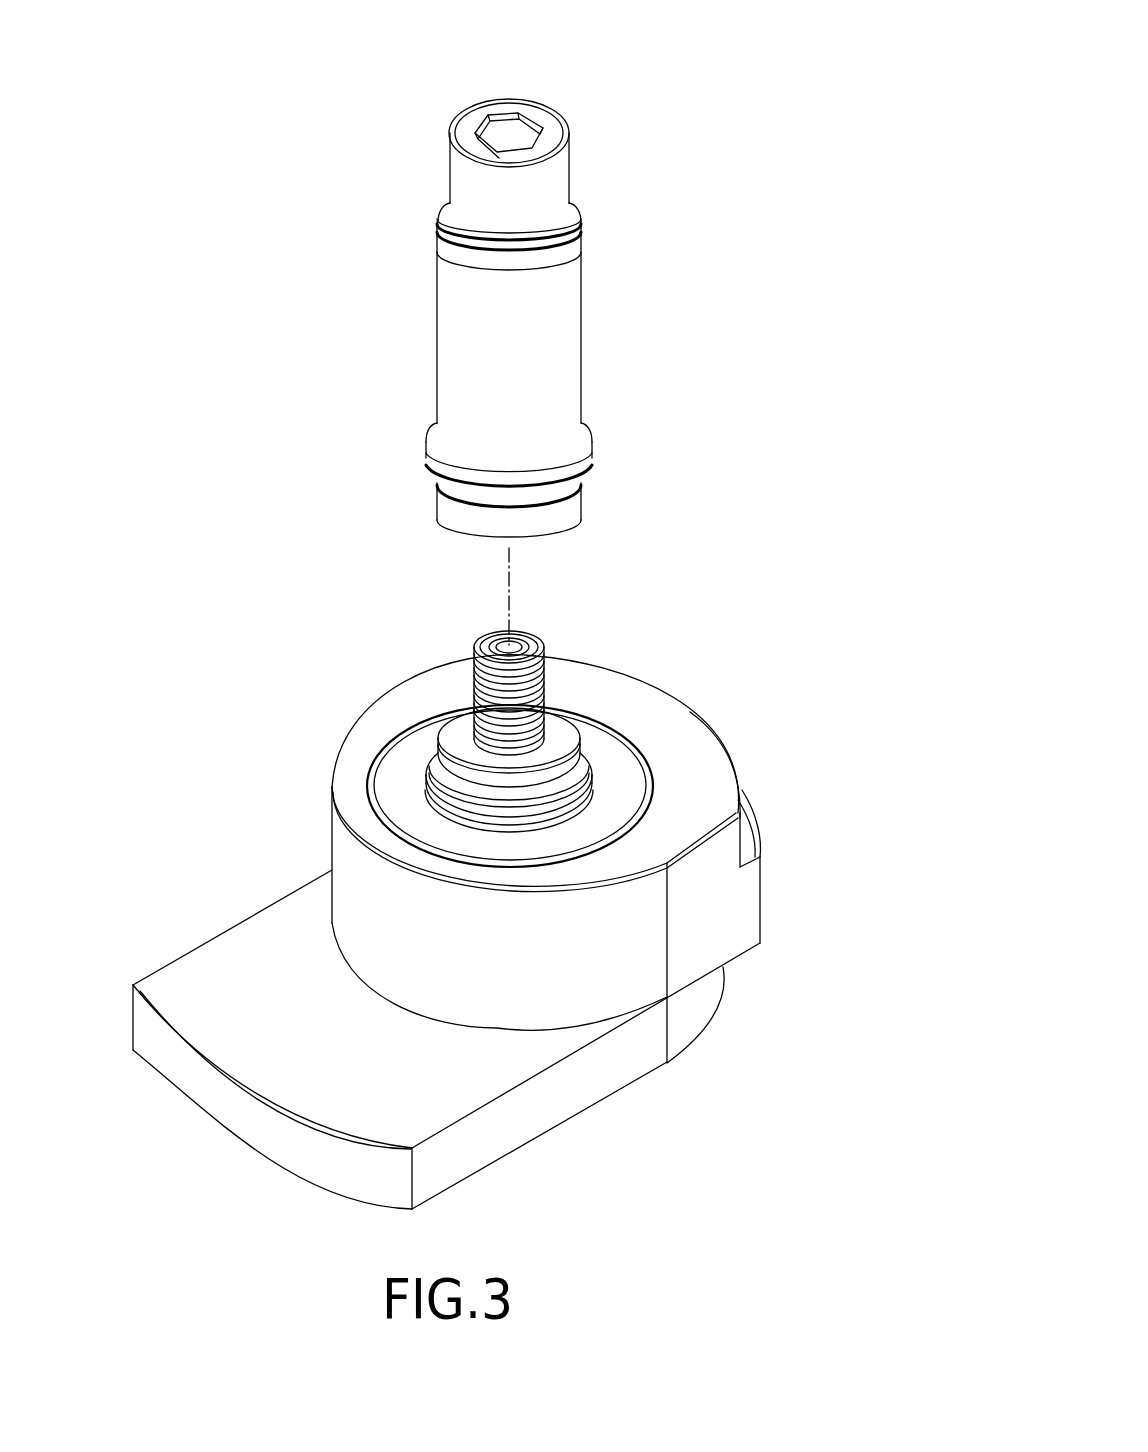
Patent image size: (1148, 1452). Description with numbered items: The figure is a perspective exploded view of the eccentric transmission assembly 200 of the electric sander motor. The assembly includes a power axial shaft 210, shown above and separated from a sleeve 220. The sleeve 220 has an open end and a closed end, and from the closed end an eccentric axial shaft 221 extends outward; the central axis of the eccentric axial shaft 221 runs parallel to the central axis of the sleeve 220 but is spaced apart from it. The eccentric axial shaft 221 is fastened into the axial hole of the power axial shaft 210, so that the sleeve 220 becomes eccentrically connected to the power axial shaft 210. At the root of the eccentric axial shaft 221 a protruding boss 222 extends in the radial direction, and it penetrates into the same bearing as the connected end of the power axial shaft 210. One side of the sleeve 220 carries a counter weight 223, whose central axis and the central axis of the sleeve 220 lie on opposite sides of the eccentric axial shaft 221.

The eccentric transmission assembly 200 is at (469, 47).
The power axial shaft 210 is at (597, 329).
The sleeve 220 is at (795, 824).
The eccentric axial shaft 221 is at (543, 683).
The protruding boss 222 is at (563, 727).
The counter weight 223 is at (226, 968).